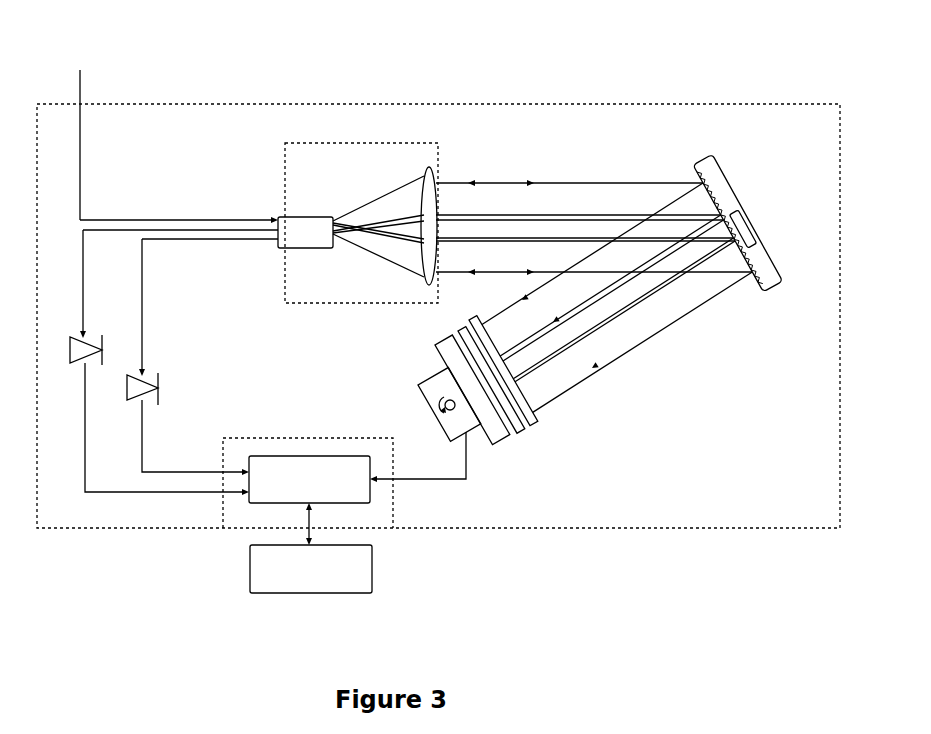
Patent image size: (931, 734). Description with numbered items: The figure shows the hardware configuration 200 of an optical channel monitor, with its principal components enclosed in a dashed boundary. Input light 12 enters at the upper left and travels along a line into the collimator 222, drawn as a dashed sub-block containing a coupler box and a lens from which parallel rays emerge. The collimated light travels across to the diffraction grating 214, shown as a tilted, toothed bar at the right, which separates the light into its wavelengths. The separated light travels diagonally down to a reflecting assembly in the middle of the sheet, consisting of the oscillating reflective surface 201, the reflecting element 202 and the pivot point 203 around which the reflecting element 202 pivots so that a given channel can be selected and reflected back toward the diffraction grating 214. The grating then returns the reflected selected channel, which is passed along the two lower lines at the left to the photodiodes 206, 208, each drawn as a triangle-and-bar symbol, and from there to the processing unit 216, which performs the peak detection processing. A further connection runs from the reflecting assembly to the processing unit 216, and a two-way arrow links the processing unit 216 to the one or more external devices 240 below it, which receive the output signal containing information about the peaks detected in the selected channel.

The optical fiber input 12 is at (98, 52).
The hardware configuration 200 is at (487, 78).
The oscillating reflective surface 201 is at (478, 450).
The reflecting element 202 is at (507, 437).
The pivot point 203 is at (442, 403).
The photodiode 206 is at (74, 367).
The photodiode 208 is at (130, 405).
The diffraction grating 214 is at (775, 293).
The processing unit 216 is at (264, 507).
The collimator 222 is at (395, 143).
The external devices 240 is at (375, 573).